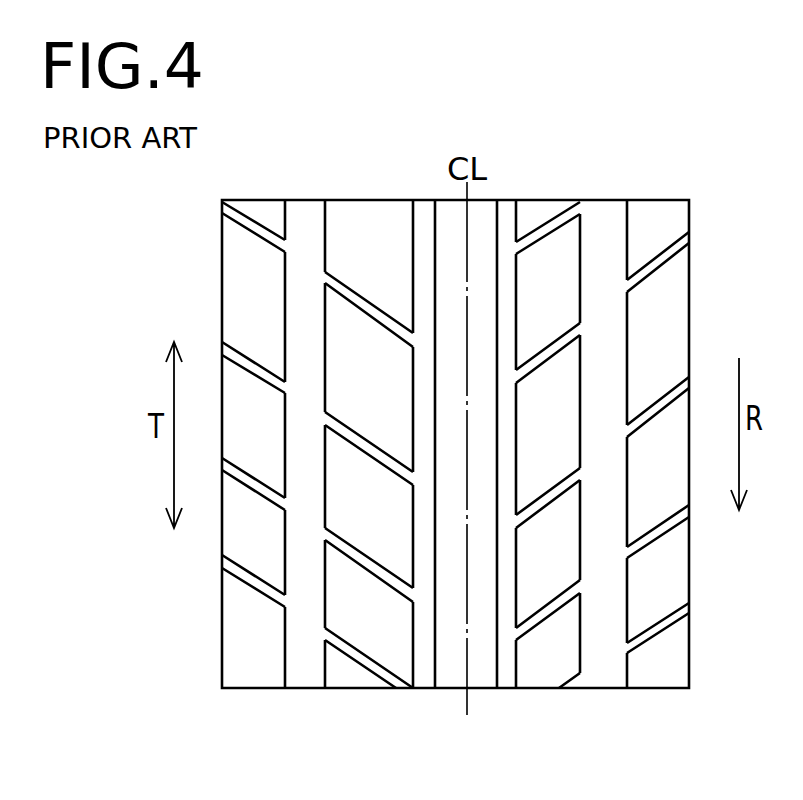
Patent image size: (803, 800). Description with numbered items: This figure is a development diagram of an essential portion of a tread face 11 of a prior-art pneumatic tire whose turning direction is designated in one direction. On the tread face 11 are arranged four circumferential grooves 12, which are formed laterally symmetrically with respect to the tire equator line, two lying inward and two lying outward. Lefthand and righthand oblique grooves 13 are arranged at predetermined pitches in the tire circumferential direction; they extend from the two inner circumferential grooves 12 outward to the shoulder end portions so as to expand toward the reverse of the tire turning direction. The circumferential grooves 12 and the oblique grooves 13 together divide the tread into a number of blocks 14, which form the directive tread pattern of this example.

The tread face 11 is at (592, 200).
The circumferential grooves 12 is at (423, 252).
The oblique grooves 13 is at (360, 657).
The blocks 14 is at (383, 626).